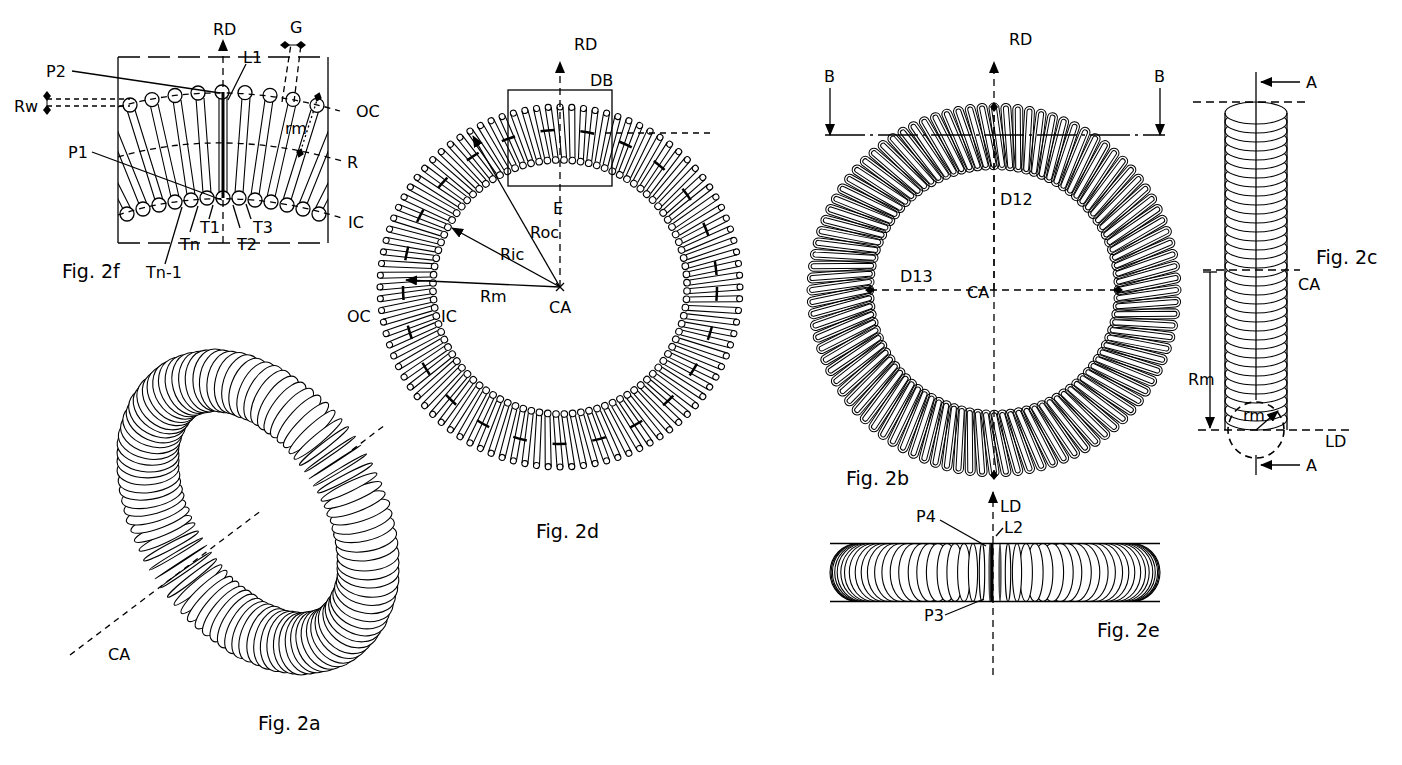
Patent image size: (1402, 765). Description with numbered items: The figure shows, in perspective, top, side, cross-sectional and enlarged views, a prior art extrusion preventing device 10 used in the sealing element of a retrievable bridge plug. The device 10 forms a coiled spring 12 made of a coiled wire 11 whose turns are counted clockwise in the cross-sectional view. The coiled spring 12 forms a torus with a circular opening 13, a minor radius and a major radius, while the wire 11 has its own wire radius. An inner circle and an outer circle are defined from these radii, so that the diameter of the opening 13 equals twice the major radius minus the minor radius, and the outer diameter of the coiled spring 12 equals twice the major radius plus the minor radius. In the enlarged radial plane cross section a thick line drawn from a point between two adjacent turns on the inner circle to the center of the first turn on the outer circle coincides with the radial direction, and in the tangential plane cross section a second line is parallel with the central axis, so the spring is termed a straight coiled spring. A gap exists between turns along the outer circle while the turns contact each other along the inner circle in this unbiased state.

In FIG. 2A, the extrusion preventing device 10 is at (96, 402).
In FIG. 2D, the extrusion preventing device 10 is at (459, 95).
In FIG. 2B, the extrusion preventing device 10 is at (806, 100).
In FIG. 2C, the extrusion preventing device 10 is at (1336, 190).
In FIG. 2E, the extrusion preventing device 10 is at (820, 573).
In FIG. 2F, the extrusion preventing device 10 is at (223, 150).
In FIG. 2A, the coiled wire 11 is at (278, 385).
In FIG. 2A, the coiled spring 12 is at (420, 603).
In FIG. 2D, the coiled spring 12 is at (628, 118).
In FIG. 2B, the coiled spring 12 is at (1062, 118).
In FIG. 2A, the circular opening 13 is at (304, 585).
In FIG. 2B, the circular opening 13 is at (1059, 245).